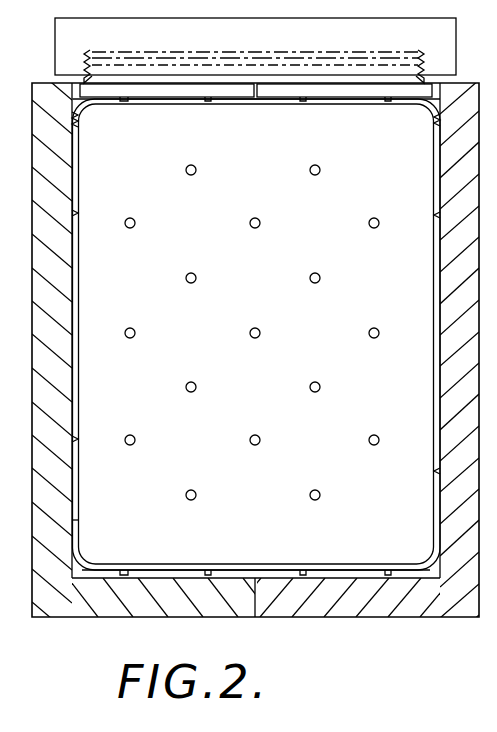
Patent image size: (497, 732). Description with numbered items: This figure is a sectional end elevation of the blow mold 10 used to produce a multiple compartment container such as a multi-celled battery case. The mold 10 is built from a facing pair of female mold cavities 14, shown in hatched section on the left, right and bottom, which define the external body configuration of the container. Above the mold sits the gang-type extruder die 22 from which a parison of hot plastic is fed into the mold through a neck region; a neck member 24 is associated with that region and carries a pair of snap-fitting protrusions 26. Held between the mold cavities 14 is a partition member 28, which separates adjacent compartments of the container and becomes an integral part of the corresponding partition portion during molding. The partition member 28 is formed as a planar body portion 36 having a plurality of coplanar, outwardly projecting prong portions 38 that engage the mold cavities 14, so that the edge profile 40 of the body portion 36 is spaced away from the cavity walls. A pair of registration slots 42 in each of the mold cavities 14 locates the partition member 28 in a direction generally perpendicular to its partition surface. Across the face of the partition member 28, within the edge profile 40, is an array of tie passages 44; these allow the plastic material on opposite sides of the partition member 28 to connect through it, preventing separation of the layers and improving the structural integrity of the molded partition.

The mold 10 is at (372, 648).
The female mold cavities 14 is at (72, 302).
The gang-type extruder die 22 is at (458, 42).
The neck member 24 is at (168, 53).
The snap-fitting protrusions 26 is at (82, 50).
The partition member 28 is at (246, 398).
The planar body portion 36 is at (161, 515).
The prong portions 38 is at (197, 100).
The edge profile 40 is at (437, 341).
The registration slots 42 is at (183, 98).
The tie passages 44 is at (257, 228).